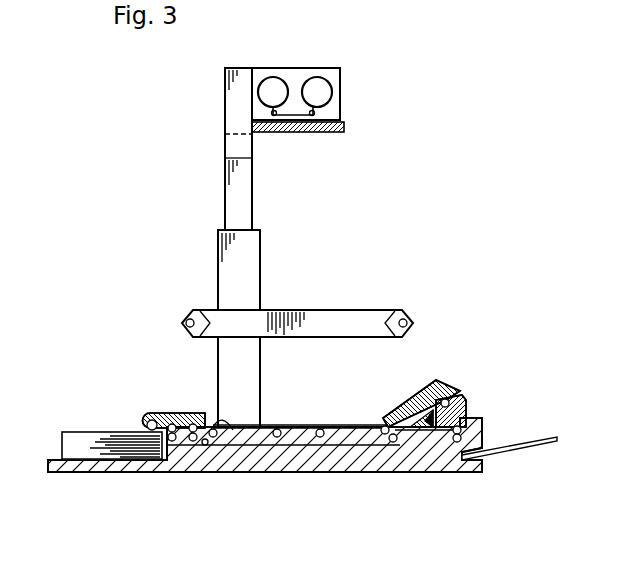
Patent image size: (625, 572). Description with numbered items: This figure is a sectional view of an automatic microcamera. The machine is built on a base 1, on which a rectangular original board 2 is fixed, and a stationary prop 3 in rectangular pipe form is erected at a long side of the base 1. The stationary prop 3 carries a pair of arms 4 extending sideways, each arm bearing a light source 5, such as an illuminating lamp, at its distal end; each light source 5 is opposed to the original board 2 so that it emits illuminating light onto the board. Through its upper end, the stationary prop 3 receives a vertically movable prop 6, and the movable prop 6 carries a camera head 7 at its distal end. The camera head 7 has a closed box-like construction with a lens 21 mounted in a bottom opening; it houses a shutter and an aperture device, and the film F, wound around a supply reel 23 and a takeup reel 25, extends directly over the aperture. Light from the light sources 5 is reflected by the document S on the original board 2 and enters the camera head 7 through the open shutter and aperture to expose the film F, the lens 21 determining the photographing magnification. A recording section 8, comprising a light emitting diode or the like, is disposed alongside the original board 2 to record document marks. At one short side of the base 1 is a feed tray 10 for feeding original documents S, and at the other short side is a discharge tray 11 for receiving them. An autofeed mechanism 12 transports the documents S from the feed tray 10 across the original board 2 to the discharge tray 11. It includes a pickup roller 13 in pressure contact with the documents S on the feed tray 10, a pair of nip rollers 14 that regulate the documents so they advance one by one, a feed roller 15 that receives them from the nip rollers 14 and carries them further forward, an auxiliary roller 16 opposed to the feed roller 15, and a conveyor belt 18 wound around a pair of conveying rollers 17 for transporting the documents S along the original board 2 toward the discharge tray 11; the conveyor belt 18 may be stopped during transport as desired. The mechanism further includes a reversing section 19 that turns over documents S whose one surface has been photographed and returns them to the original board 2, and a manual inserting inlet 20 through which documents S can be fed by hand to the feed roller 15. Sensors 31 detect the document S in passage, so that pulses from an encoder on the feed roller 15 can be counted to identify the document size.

The base 1 is at (361, 466).
The original board 2 is at (342, 425).
The stationary prop 3 is at (228, 356).
The arms 4 is at (207, 318).
The light source 5 is at (187, 314).
The movable prop 6 is at (247, 203).
The camera head 7 is at (338, 70).
The recording section 8 is at (216, 437).
The feed tray 10 is at (52, 458).
The discharge tray 11 is at (511, 445).
The autofeed mechanism 12 is at (219, 511).
The pickup roller 13 is at (145, 415).
The nip rollers 14 is at (177, 423).
The feed roller 15 is at (194, 441).
The auxiliary roller 16 is at (194, 424).
The conveying rollers 17 is at (206, 445).
The conveyor belt 18 is at (320, 440).
The reversing section 19 is at (443, 388).
The manual inserting inlet 20 is at (165, 425).
The lens 21 is at (293, 133).
The supply reel 23 is at (268, 84).
The takeup reel 25 is at (318, 84).
The sensors 31 is at (215, 424).
The film F is at (295, 114).
The original documents S is at (95, 453).